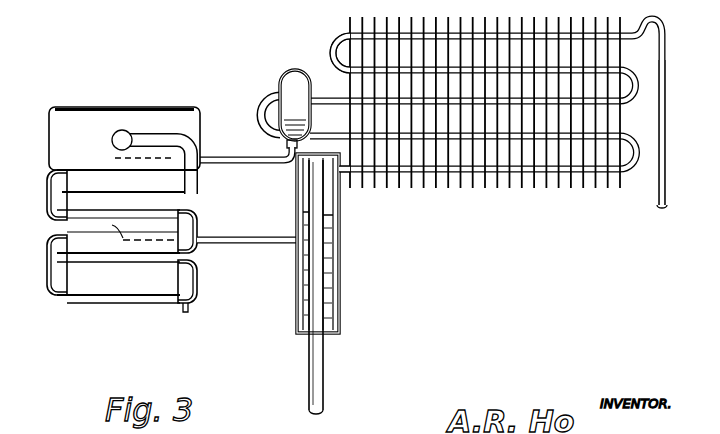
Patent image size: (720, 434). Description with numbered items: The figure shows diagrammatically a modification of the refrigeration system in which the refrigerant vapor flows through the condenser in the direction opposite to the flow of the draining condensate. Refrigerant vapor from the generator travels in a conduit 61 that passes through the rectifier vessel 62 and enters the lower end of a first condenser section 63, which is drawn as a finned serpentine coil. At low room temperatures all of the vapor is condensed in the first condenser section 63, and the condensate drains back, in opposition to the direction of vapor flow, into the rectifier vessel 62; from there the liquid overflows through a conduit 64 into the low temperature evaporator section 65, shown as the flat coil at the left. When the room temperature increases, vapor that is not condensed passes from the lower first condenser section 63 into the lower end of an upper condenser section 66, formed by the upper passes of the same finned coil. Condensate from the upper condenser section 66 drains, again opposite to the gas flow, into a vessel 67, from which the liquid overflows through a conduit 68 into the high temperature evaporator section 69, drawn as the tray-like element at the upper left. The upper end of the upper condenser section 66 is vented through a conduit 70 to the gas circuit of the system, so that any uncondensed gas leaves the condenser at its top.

The conduit 61 is at (318, 372).
The rectifier vessel 62 is at (340, 304).
The first condenser section 63 is at (628, 186).
The conduit 64 is at (224, 246).
The low temperature evaporator section 65 is at (196, 212).
The upper condenser section 66 is at (332, 47).
The vessel 67 is at (281, 80).
The conduit 68 is at (236, 147).
The high temperature evaporator section 69 is at (127, 131).
The conduit 70 is at (662, 158).